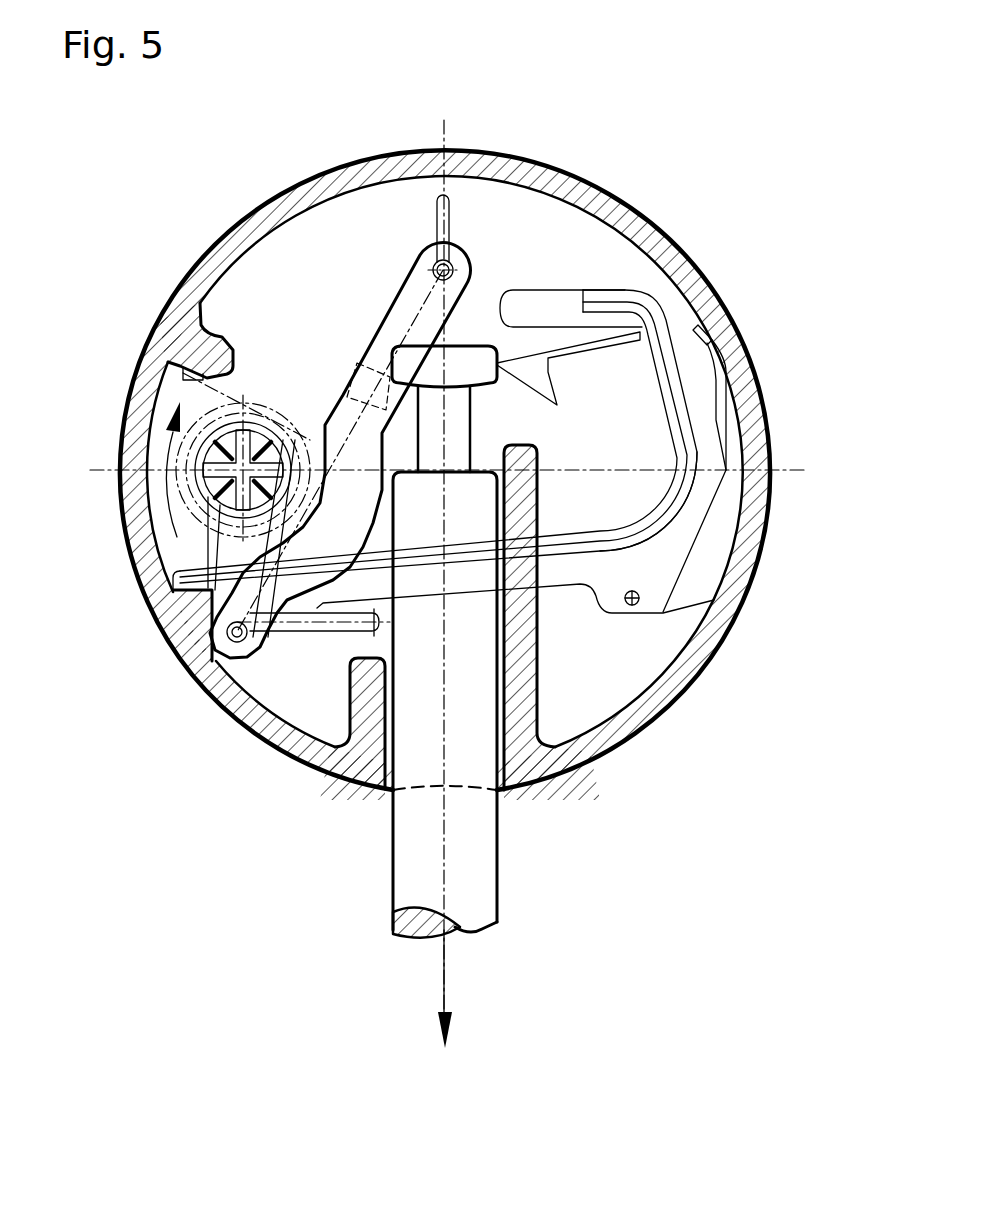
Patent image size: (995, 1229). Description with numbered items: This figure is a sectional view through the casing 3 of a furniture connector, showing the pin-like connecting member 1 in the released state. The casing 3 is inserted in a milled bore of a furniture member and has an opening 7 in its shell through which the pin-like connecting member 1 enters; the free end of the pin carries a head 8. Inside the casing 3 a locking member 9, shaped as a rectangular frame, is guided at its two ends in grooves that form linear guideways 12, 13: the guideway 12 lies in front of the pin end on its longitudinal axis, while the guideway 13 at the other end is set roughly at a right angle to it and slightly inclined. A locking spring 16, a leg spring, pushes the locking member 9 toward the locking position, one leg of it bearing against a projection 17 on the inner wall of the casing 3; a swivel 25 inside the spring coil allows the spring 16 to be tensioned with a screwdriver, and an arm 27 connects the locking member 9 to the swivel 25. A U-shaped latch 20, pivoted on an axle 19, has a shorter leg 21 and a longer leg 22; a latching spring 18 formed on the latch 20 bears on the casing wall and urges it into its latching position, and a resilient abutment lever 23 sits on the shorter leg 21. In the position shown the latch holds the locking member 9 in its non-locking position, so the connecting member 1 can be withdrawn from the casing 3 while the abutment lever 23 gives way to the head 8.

The pin-like connecting member 1 is at (470, 889).
The casing 3 is at (683, 708).
The opening 7 is at (383, 795).
The head 8 is at (466, 360).
The locking member 9 is at (418, 290).
The guideway 12 is at (447, 200).
The guideway 13 is at (322, 628).
The locking spring 16 is at (187, 493).
The projection 17 is at (200, 345).
The latching spring 18 is at (720, 400).
The axle 19 is at (640, 598).
The latch 20 is at (688, 523).
The shorter leg 21 is at (567, 307).
The longer leg 22 is at (555, 568).
The abutment lever 23 is at (532, 378).
The swivel 25 is at (215, 458).
The arm 27 is at (227, 547).